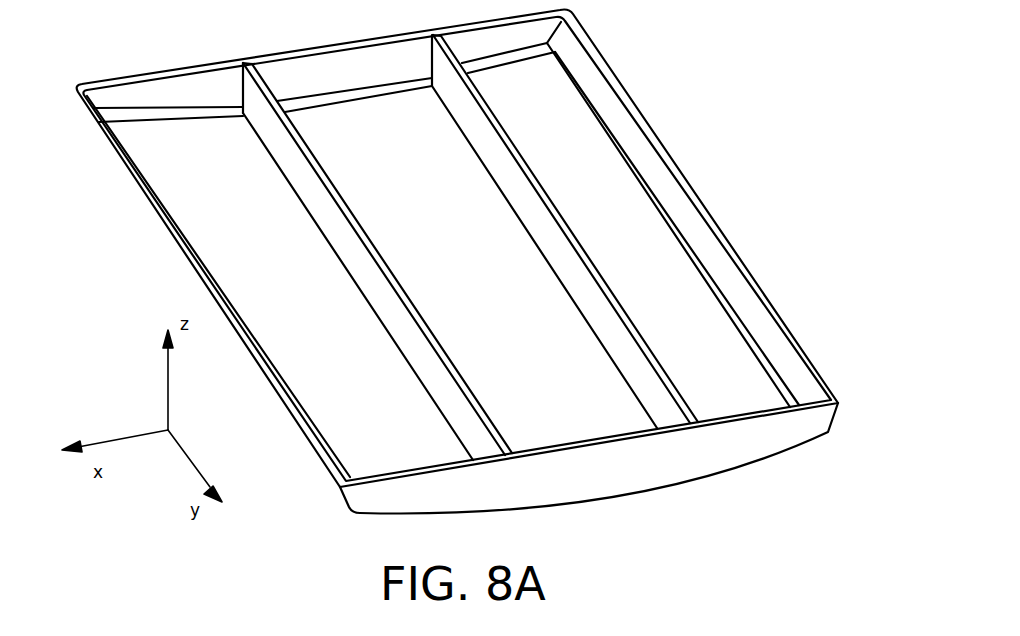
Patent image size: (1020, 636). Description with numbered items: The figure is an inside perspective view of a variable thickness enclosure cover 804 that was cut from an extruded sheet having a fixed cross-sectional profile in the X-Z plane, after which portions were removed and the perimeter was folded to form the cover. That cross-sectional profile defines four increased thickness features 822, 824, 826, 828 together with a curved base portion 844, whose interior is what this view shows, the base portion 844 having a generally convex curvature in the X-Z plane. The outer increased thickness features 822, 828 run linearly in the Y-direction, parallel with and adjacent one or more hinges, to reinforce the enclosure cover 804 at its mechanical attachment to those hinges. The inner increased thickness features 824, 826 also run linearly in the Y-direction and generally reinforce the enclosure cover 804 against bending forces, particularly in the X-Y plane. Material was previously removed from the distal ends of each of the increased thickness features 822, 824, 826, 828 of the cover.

The variable thickness enclosure cover 804 is at (733, 153).
The increased thickness feature 822 is at (188, 252).
The increased thickness feature 824 is at (390, 270).
The increased thickness feature 826 is at (637, 323).
The increased thickness feature 828 is at (810, 363).
The curved base portion 844 is at (503, 292).